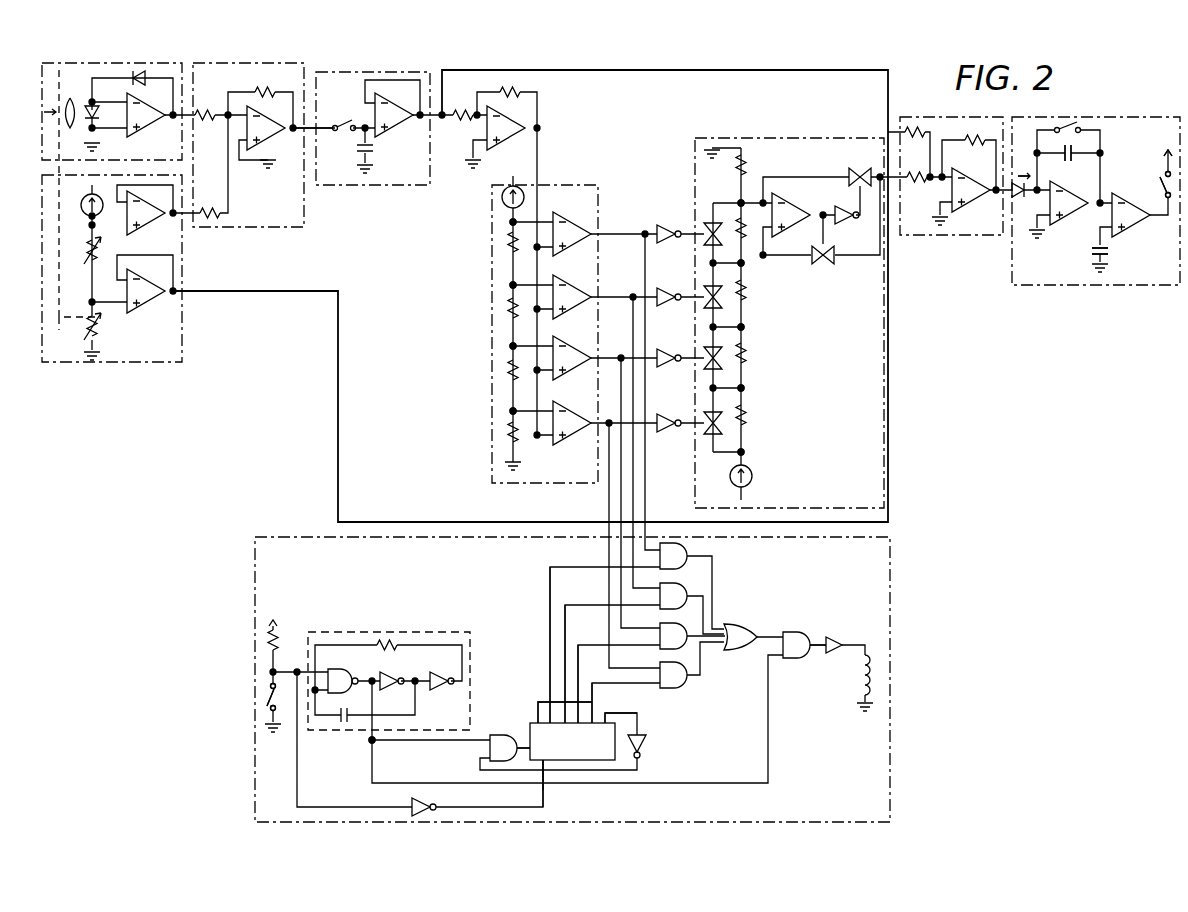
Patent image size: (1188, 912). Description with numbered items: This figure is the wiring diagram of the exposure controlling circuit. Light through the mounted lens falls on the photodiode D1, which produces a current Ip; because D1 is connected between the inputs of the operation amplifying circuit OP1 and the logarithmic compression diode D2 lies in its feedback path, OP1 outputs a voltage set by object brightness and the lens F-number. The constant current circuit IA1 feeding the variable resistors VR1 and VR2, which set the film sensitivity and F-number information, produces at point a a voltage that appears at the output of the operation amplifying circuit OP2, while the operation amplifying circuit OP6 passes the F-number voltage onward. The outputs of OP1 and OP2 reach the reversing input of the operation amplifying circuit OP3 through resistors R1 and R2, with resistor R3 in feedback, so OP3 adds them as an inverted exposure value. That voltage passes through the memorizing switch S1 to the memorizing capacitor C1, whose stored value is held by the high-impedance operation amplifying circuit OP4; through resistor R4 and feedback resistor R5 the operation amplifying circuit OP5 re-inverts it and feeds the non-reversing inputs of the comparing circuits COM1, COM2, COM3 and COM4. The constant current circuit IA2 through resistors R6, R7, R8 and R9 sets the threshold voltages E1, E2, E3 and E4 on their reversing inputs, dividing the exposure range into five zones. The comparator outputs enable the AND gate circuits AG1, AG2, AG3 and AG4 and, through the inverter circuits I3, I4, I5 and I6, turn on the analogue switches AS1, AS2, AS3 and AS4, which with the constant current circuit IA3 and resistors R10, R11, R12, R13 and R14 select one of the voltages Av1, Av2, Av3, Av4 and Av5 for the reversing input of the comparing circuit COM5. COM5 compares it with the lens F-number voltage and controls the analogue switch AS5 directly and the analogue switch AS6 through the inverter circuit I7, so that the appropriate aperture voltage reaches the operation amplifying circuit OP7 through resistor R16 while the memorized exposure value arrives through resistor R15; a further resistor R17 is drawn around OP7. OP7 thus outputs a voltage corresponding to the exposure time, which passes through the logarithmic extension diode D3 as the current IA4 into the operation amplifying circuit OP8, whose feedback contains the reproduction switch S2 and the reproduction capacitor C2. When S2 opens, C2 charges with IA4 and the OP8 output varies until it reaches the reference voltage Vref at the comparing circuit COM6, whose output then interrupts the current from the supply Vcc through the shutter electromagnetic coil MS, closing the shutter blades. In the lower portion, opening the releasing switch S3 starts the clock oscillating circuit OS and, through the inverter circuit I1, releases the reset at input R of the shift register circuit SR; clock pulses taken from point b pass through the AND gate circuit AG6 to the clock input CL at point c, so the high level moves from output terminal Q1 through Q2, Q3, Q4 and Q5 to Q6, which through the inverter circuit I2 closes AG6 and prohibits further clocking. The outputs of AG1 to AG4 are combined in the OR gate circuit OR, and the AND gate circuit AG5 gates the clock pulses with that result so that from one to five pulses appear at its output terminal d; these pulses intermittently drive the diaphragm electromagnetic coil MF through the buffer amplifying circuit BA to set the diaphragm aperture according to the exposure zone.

The electric current Ip is at (88, 102).
The photodiode D1 is at (96, 124).
The logarithmic compression diode D2 is at (140, 82).
The operation amplifying circuit OP1 is at (145, 120).
The resistor R1 is at (207, 105).
The resistor R2 is at (210, 210).
The resistor R3 is at (262, 88).
The operation amplifying circuit OP3 is at (272, 145).
The constant current circuit IA1 is at (84, 200).
The point a is at (90, 230).
The operation amplifying circuit OP2 is at (145, 222).
The operation amplifying circuit OP6 is at (150, 285).
The variable resistor VR2 is at (100, 325).
The variable resistor VR1 is at (88, 290).
The switch for memorization S1 is at (340, 124).
The capacitor for memorization C1 is at (356, 150).
The operation amplifying circuit OP4 is at (395, 122).
The resistor R4 is at (460, 120).
The resistor R5 is at (512, 92).
The operation amplifying circuit OP5 is at (515, 128).
The constant current circuit IA2 is at (502, 198).
The comparing circuit COM1 is at (570, 222).
The threshold voltage E1 is at (510, 222).
The resistor R6 is at (510, 246).
The threshold voltage E2 is at (510, 285).
The resistor R7 is at (510, 313).
The comparing circuit COM2 is at (570, 310).
The threshold voltage E3 is at (510, 346).
The resistor R8 is at (510, 374).
The comparing circuit COM3 is at (570, 372).
The threshold voltage E4 is at (510, 411).
The resistor R9 is at (510, 434).
The comparing circuit COM4 is at (570, 438).
The inverter circuit I3 is at (660, 226).
The inverter circuit I4 is at (658, 292).
The inverter circuit I5 is at (658, 354).
The inverter circuit I6 is at (664, 432).
The analogue switch AS1 is at (710, 222).
The analogue switch AS2 is at (710, 286).
The analogue switch AS3 is at (710, 347).
The analogue switch AS4 is at (710, 412).
The resistor R10 is at (738, 168).
The resistor R11 is at (738, 225).
The aperture voltage Av1 is at (742, 203).
The comparing circuit COM5 is at (788, 205).
The analogue switch AS6 is at (850, 168).
The aperture voltage Av2 is at (745, 264).
The analogue switch AS5 is at (822, 267).
The inverter circuit I7 is at (845, 222).
The resistor R12 is at (745, 290).
The aperture voltage Av3 is at (745, 328).
The resistor R13 is at (745, 354).
The aperture voltage Av4 is at (745, 389).
The resistor R14 is at (745, 414).
The aperture voltage Av5 is at (745, 452).
The constant current circuit IA3 is at (730, 468).
The resistor R15 is at (913, 128).
The resistor R16 is at (913, 182).
The resistor R17 is at (975, 143).
The operation amplifying circuit OP7 is at (972, 198).
The logarithmic extension diode D3 is at (1020, 198).
The current IA4 is at (1035, 176).
The operation amplifying circuit OP8 is at (1068, 212).
The switch for reproduction S2 is at (1082, 126).
The capacitor for reproduction C2 is at (1075, 150).
The supply voltage Vcc is at (724, 374).
The electromagnetic coil MS is at (1163, 186).
The comparing circuit COM6 is at (1128, 228).
The reference input voltage Vref is at (1102, 258).
The switch for releasing S3 is at (268, 695).
The clock oscillating circuit OS is at (408, 632).
The node b is at (374, 745).
The inverter circuit I1 is at (428, 800).
The AND gate circuit AG6 is at (490, 750).
The node c is at (526, 746).
The shift register circuit SR is at (600, 750).
The output terminal Q1 is at (538, 722).
The output terminal Q2 is at (550, 722).
The output terminal Q3 is at (565, 722).
The output terminal Q4 is at (578, 722).
The output terminal Q5 is at (596, 722).
The output terminal Q6 is at (640, 716).
The inverter circuit I2 is at (648, 742).
The reset input R is at (545, 762).
The clock input CL is at (562, 760).
The AND gate circuit AG1 is at (685, 550).
The AND gate circuit AG2 is at (685, 590).
The AND gate circuit AG3 is at (685, 628).
The AND gate circuit AG4 is at (685, 682).
The AND gate circuit AG5 is at (794, 655).
The OR gate circuit OR is at (750, 645).
The output terminal d is at (818, 643).
The buffer amplifying circuit BA is at (838, 642).
The electromagnetic coil MF is at (860, 676).